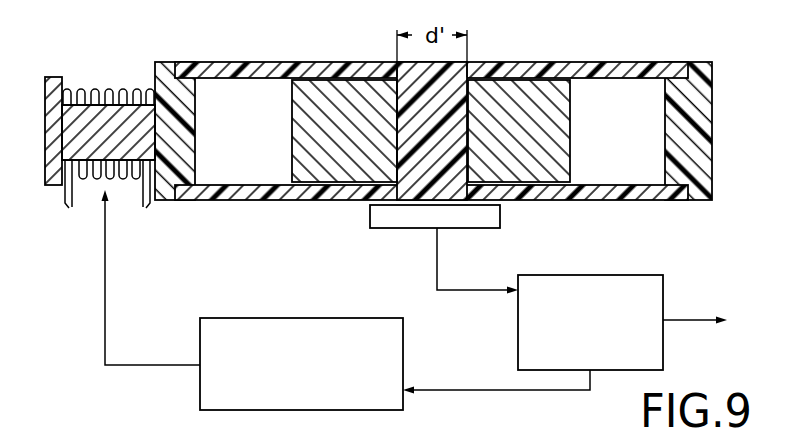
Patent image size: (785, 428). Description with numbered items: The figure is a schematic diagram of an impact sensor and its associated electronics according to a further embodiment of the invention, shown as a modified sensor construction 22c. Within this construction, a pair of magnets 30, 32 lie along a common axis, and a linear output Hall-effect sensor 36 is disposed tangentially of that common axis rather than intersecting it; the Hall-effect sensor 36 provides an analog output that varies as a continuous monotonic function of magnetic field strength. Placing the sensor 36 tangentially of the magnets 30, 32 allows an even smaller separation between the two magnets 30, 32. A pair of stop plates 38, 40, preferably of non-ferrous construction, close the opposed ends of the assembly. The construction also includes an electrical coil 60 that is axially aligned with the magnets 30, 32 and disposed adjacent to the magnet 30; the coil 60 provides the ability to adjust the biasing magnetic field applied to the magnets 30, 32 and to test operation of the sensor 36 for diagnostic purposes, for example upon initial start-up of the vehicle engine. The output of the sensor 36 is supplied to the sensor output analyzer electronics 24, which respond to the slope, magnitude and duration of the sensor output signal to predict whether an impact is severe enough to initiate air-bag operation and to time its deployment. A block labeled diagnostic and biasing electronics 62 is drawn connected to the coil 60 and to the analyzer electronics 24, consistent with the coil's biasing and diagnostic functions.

The modified sensor construction 22c is at (565, 58).
The sensor output analyzer electronics 24 is at (615, 275).
The magnet 30 is at (298, 120).
The magnet 32 is at (563, 135).
The linear output Hall-effect sensor 36 is at (370, 212).
The stop plate 38 is at (157, 63).
The stop plate 40 is at (712, 102).
The electrical coil 60 is at (84, 88).
The diagnostic/biasing electronics 62 is at (270, 318).